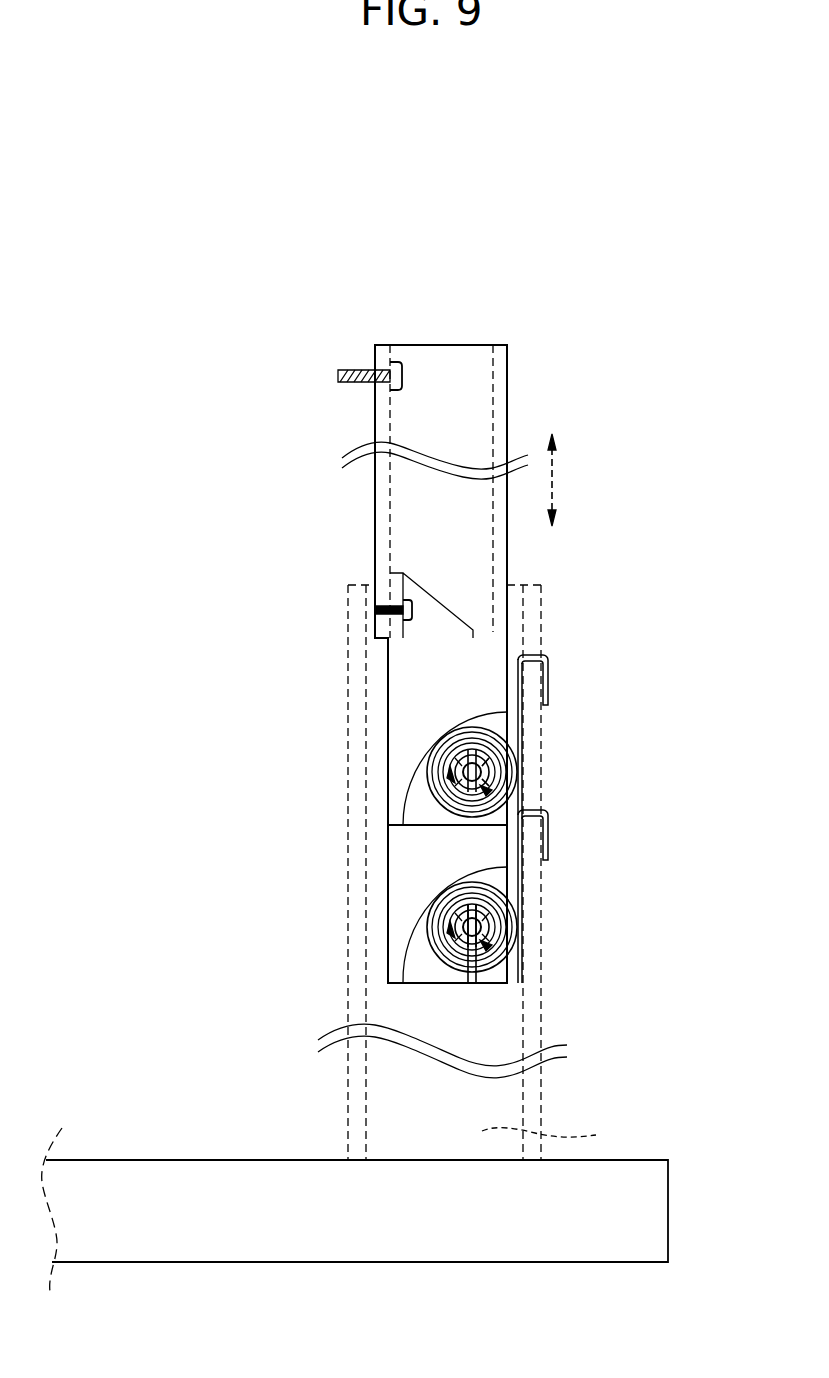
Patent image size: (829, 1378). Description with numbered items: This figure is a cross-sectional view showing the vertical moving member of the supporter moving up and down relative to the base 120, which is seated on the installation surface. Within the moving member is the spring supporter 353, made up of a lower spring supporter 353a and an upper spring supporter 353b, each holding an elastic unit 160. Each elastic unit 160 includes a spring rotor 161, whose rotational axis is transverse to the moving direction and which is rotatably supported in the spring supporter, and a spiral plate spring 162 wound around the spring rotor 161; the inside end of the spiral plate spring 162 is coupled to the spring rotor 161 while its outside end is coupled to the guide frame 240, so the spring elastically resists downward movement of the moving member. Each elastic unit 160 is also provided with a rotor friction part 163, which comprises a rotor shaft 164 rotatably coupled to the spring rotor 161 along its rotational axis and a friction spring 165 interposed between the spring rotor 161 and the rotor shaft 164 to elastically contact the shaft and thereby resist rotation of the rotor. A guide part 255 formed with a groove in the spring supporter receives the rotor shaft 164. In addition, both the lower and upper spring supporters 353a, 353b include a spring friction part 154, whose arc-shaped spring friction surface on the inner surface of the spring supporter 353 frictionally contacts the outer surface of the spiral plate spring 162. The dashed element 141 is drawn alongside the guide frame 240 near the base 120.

The spring supporter 353 is at (170, 753).
The lower spring supporter 353a is at (247, 873).
The upper spring supporter 353b is at (247, 717).
The guide part 255 is at (463, 768).
The spring friction part 154 is at (433, 795).
The elastic unit 160 is at (635, 819).
The spring rotor 161 is at (520, 732).
The spiral plate spring 162 is at (697, 790).
The rotor friction part 163 is at (585, 869).
The rotor shaft 164 is at (498, 773).
The friction spring 165 is at (496, 797).
The guide frame 240 is at (537, 1088).
The frame member 141 is at (482, 1126).
The base 120 is at (328, 1262).